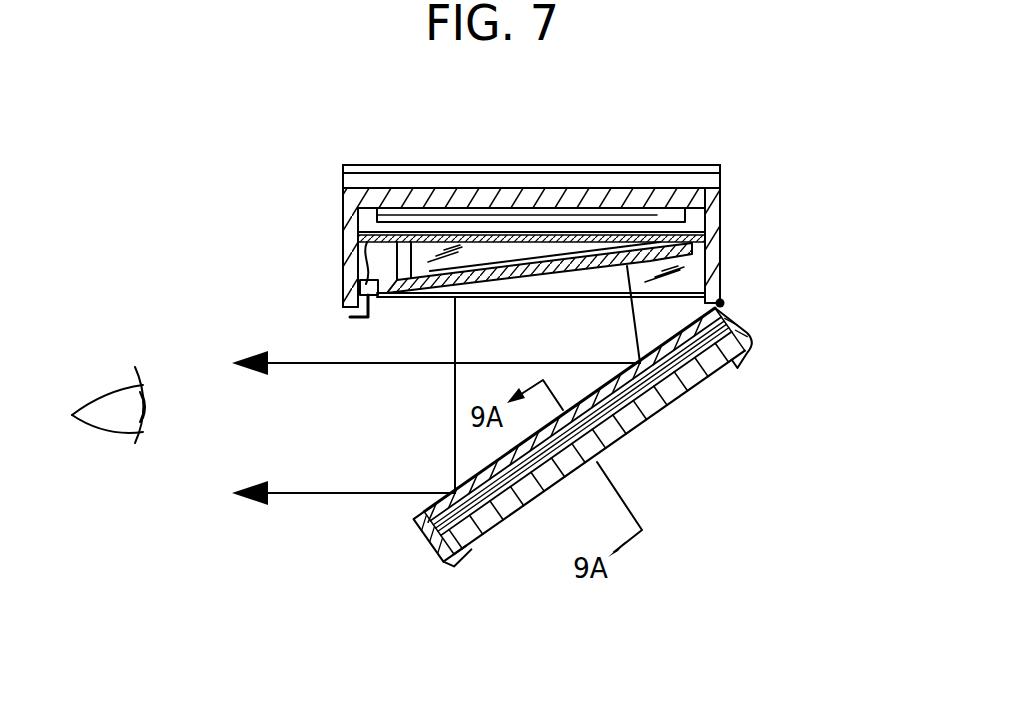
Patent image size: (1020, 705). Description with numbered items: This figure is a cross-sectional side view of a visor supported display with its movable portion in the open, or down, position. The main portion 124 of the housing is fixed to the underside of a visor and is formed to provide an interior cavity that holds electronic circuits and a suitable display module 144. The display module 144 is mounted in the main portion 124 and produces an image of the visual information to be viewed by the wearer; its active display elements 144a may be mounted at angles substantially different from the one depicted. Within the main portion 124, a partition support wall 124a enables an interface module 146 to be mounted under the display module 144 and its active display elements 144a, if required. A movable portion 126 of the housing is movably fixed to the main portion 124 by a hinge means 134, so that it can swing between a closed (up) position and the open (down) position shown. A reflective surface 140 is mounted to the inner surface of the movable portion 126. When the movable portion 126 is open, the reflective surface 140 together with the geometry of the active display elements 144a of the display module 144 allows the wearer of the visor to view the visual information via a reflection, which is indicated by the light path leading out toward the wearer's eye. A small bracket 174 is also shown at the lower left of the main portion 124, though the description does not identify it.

The main portion 124 is at (713, 212).
The partition support wall 124a is at (538, 235).
The movable portion 126 is at (719, 367).
The hinge means 134 is at (722, 302).
The reflective surface 140 is at (666, 398).
The display module 144 is at (412, 297).
The active display elements 144a is at (547, 272).
The interface module 146 is at (432, 222).
The connector bracket 174 is at (358, 290).